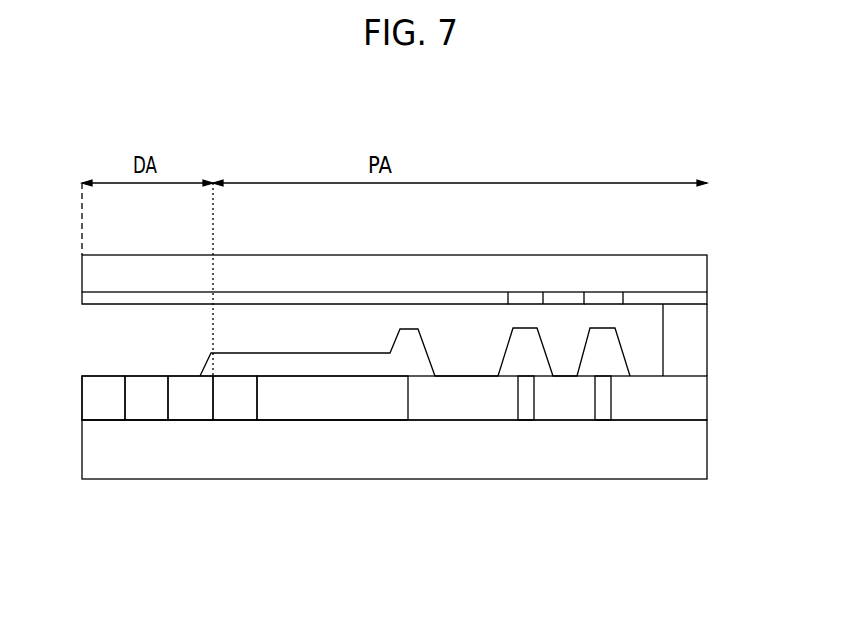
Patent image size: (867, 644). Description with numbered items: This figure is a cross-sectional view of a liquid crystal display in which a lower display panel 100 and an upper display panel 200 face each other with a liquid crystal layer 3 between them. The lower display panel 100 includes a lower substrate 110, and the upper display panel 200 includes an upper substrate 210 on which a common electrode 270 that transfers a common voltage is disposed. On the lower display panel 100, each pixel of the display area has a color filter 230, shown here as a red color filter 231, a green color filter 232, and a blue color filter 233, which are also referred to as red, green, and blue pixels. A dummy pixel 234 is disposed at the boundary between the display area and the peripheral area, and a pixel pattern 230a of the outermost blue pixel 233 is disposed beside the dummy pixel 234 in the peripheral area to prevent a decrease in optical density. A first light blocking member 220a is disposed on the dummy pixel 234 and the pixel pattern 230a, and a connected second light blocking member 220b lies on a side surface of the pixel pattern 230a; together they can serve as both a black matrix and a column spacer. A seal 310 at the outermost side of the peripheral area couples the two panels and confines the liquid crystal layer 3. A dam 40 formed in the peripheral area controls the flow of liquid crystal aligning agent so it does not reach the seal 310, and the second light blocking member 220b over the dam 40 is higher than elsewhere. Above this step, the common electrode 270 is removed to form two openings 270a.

The upper display panel 200 is at (78, 255).
The upper substrate 210 is at (690, 272).
The common electrode 270 is at (690, 300).
The openings 270a is at (607, 302).
The liquid crystal layer 3 is at (78, 304).
The seal 310 is at (690, 340).
The first light blocking member 220a is at (318, 368).
The lower display panel 100 is at (78, 376).
The second light blocking member 220b is at (690, 396).
The lower substrate 110 is at (690, 455).
The color filter 230 is at (148, 493).
The red color filter 231 is at (96, 412).
The green color filter 232 is at (146, 412).
The blue color filter 233 is at (192, 412).
The dummy pixel 234 is at (240, 405).
The pixel pattern 230a is at (380, 403).
The dam 40 is at (525, 405).